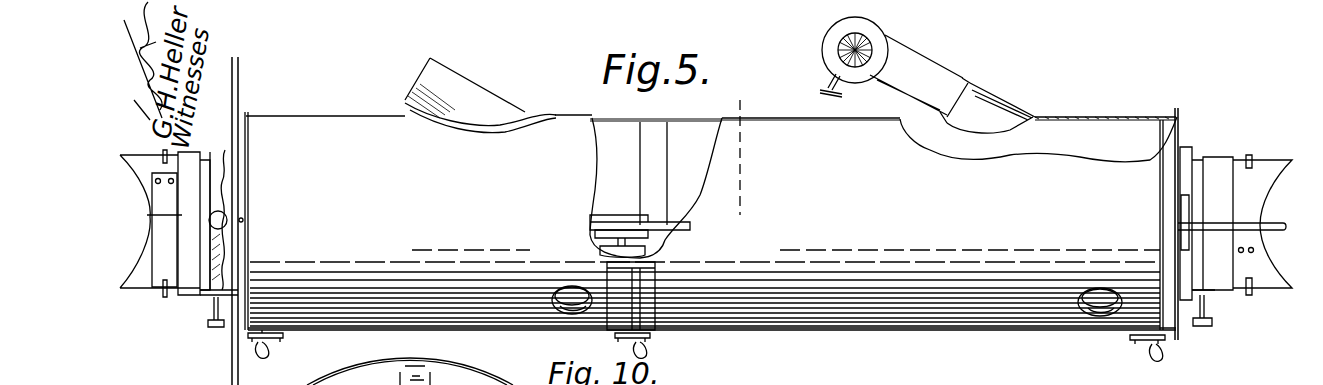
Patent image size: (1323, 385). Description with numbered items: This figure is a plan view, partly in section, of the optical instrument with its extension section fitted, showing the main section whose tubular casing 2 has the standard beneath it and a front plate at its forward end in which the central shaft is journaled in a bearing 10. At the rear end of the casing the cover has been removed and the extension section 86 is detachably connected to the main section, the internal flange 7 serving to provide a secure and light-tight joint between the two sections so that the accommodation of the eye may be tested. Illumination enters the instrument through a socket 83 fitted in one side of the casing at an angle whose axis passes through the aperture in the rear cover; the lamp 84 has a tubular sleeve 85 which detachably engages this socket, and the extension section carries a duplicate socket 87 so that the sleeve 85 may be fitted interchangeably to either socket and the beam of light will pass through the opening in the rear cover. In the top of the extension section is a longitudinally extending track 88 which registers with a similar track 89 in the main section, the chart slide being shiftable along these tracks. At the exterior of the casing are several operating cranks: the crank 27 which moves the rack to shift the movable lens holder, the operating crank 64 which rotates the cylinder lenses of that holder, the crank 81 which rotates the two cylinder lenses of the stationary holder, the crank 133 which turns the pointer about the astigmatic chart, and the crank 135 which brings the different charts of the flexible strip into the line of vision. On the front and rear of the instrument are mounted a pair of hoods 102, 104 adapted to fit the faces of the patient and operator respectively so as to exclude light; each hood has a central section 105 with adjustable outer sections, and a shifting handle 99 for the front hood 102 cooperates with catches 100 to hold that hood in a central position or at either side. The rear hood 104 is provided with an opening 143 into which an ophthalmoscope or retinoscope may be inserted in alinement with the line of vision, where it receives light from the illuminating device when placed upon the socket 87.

The tubular casing 2 is at (710, 221).
The internal flange 7 is at (656, 188).
The bearing 10 is at (762, 101).
The crank 27 is at (650, 348).
The operating crank 64 is at (576, 322).
The crank 81 is at (268, 352).
The socket 83 is at (480, 95).
The lamp 84 is at (882, 40).
The tubular sleeve 85 is at (920, 76).
The extension section 86 is at (1038, 173).
The socket 87 is at (987, 108).
The track 88 is at (738, 218).
The track 89 is at (592, 228).
The shifting handle 99 is at (217, 218).
The catches 100 is at (227, 193).
The hood 102 is at (199, 293).
The hood 104 is at (1223, 290).
The central section 105 is at (607, 285).
The crank 133 is at (1100, 325).
The crank 135 is at (1160, 356).
The opening 143 is at (1186, 200).